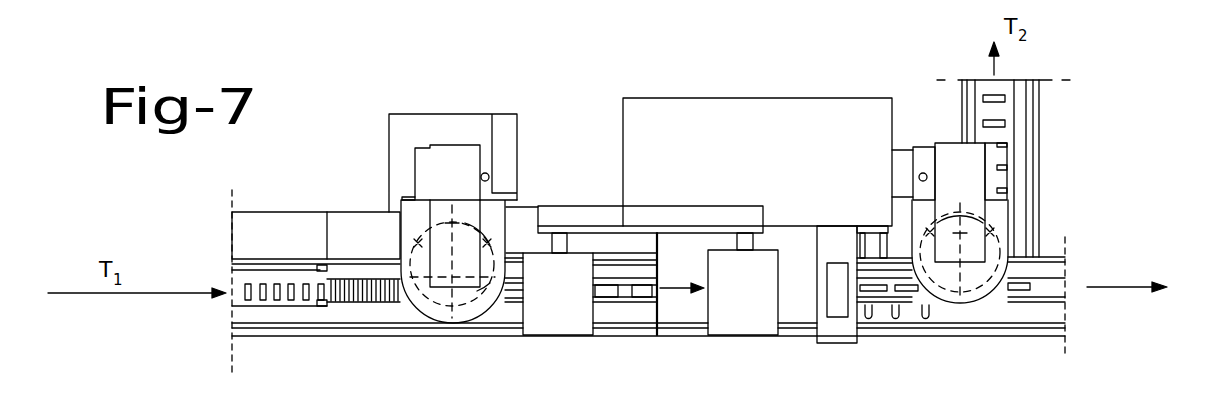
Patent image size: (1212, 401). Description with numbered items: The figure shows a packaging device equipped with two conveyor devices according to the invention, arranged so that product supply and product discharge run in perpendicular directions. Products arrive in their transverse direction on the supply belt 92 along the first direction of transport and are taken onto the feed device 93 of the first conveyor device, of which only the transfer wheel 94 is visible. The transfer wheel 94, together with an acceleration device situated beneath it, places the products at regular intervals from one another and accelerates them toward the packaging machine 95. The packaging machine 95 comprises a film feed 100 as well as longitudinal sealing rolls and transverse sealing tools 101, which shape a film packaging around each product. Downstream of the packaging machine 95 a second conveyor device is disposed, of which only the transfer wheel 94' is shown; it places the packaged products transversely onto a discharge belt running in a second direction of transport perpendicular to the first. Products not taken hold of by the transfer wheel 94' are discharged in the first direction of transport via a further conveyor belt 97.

The supply belt 92 is at (258, 302).
The feed device 93 is at (364, 303).
The transfer wheel 94 is at (476, 218).
The transfer wheel 94' is at (1006, 191).
The packaging machine 95 is at (680, 310).
The further conveyor belt 97 is at (1055, 298).
The film feed 100 is at (537, 310).
The transverse sealing tools 101 is at (835, 325).